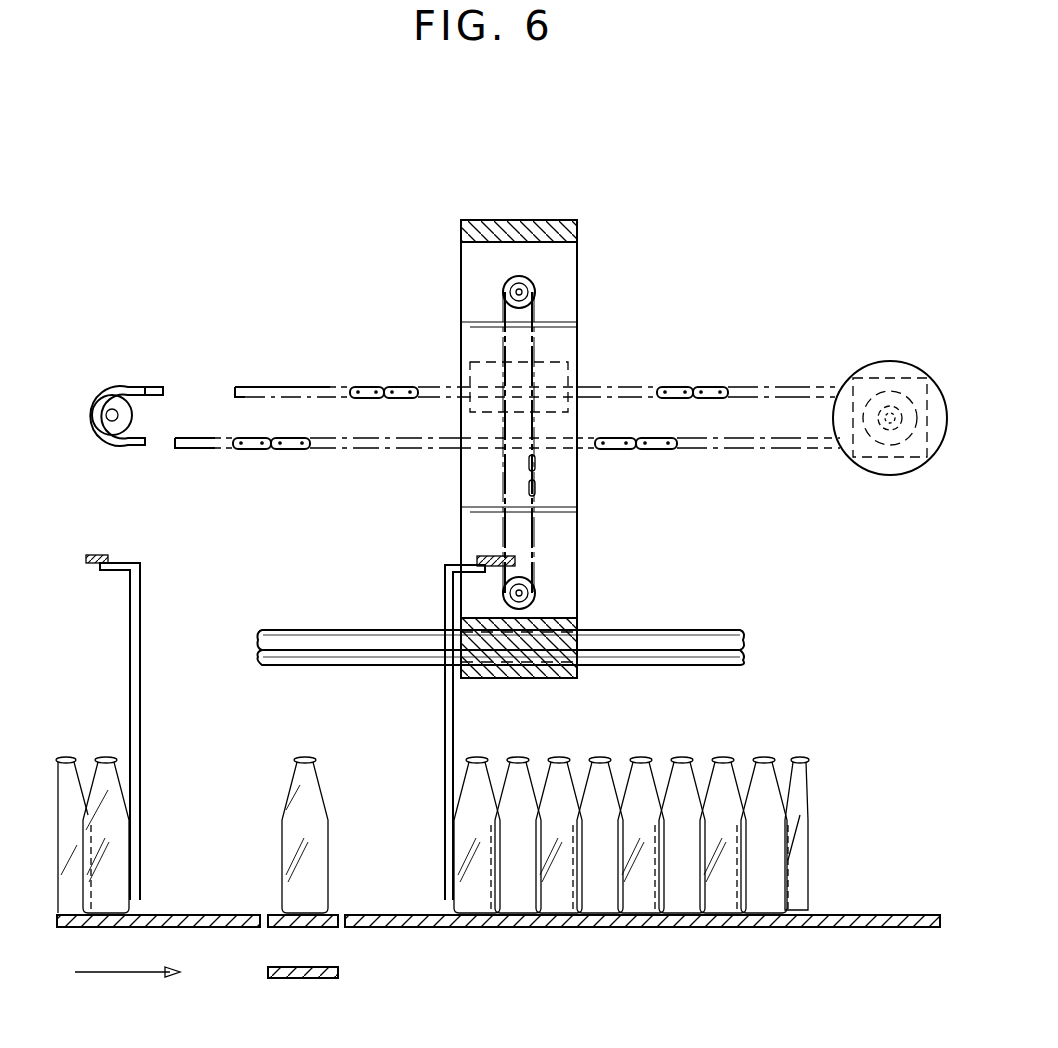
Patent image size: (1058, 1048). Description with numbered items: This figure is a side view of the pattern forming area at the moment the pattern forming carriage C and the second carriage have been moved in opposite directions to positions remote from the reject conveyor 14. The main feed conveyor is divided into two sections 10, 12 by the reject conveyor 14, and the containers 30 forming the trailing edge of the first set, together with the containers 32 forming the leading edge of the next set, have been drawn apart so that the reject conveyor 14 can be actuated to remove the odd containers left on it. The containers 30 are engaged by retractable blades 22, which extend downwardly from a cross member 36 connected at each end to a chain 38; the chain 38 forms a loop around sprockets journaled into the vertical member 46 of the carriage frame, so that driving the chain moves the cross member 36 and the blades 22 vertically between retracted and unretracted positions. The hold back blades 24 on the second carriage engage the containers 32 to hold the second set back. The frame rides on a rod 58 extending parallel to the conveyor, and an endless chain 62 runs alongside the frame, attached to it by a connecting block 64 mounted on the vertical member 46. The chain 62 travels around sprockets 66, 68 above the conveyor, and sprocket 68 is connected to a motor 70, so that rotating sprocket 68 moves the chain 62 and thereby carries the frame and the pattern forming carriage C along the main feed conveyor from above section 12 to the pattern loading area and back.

The main feed conveyor section 10 is at (217, 915).
The main feed conveyor section 12 is at (855, 915).
The reject conveyor 14 is at (328, 927).
The retractable blades 22 is at (445, 760).
The hold back blades 24 is at (140, 640).
The containers 30 is at (478, 780).
The containers 32 is at (120, 830).
The cross member 36 is at (490, 556).
The chain 38 is at (538, 318).
The vertical member 46 is at (560, 264).
The rod 58 is at (685, 638).
The endless chain 62 is at (712, 388).
The connecting block 64 is at (577, 372).
The sprocket 66 is at (128, 400).
The sprocket 68 is at (876, 370).
The motor 70 is at (922, 370).
The pattern forming means C is at (458, 291).